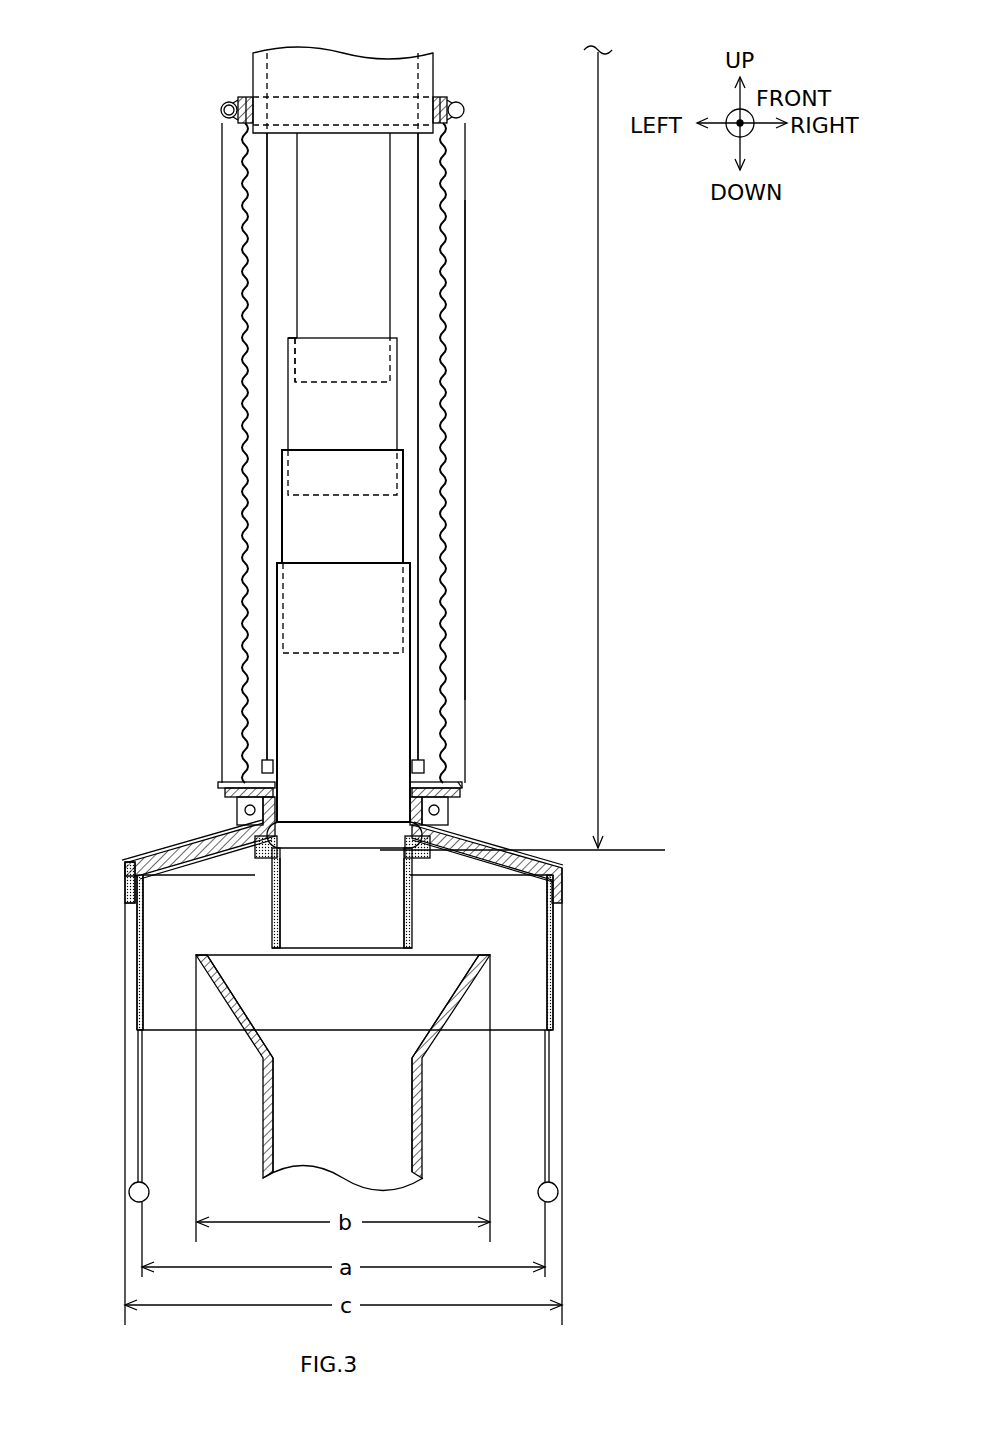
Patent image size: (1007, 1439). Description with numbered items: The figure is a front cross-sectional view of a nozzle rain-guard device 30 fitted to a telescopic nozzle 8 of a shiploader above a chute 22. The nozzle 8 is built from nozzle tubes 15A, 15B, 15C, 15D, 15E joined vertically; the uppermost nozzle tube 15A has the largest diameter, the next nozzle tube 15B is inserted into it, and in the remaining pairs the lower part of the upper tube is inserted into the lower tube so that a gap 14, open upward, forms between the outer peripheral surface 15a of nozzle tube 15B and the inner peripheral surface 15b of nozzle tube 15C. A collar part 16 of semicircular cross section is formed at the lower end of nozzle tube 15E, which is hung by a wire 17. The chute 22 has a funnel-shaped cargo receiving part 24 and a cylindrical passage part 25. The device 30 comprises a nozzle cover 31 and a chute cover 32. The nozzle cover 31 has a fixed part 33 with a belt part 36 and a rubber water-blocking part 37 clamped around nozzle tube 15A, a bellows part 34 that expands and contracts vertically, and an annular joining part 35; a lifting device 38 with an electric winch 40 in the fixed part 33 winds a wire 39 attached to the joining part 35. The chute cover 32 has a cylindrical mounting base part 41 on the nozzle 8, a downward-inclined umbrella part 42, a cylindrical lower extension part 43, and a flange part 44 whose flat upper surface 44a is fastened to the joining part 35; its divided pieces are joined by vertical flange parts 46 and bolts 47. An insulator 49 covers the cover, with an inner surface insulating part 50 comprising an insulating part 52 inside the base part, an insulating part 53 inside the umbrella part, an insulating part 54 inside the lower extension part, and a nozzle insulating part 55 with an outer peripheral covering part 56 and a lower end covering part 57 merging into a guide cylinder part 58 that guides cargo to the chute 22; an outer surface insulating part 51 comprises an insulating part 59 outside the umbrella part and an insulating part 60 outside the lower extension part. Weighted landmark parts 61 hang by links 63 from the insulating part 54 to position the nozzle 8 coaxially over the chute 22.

The nozzle 8 is at (397, 198).
The gap 14 is at (292, 334).
The uppermost nozzle tube 15A is at (335, 65).
The nozzle tube 15B is at (373, 300).
The nozzle tube 15C is at (380, 412).
The nozzle tube 15D is at (380, 522).
The nozzle tube 15E is at (380, 692).
The outer peripheral surface 15a is at (296, 355).
The inner peripheral surface 15b is at (296, 345).
The collar part 16 is at (345, 850).
The wire 17 is at (270, 240).
The chute 22 is at (462, 1108).
The cargo receiving part 24 is at (439, 1044).
The passage part 25 is at (425, 1140).
The nozzle rain-guard device 30 is at (450, 93).
The nozzle cover 31 is at (450, 242).
The chute cover 32 is at (506, 834).
The fixed part 33 is at (448, 92).
The bellows part 34 is at (465, 266).
The joining part 35 is at (462, 786).
The belt part 36 is at (240, 97).
The water-blocking part 37 is at (250, 97).
The lifting device 38 is at (218, 106).
The wire 39 is at (222, 167).
The electric winch 40 is at (225, 97).
The mounting base part 41 is at (237, 813).
The umbrella part 42 is at (190, 850).
The lower extension part 43 is at (125, 880).
The flange part 44 is at (220, 790).
The upper surface 44a is at (238, 780).
The vertical flange part 46 is at (235, 810).
The bolt 47 is at (495, 826).
The insulator 49 is at (515, 835).
The inner surface insulating part 50 is at (498, 874).
The outer surface insulating part 51 is at (568, 880).
The insulating part inside the base part 52 is at (277, 810).
The insulating part inside the umbrella part 53 is at (180, 861).
The insulating part inside the lower extension part 54 is at (138, 895).
The nozzle insulating part 55 is at (262, 858).
The outer peripheral covering part 56 is at (257, 849).
The lower end covering part 57 is at (270, 862).
The guide cylinder part 58 is at (321, 937).
The insulating part outside the umbrella part 59 is at (160, 860).
The insulating part outside the lower extension part 60 is at (125, 894).
The landmark part 61 is at (128, 1195).
The link 63 is at (137, 1100).